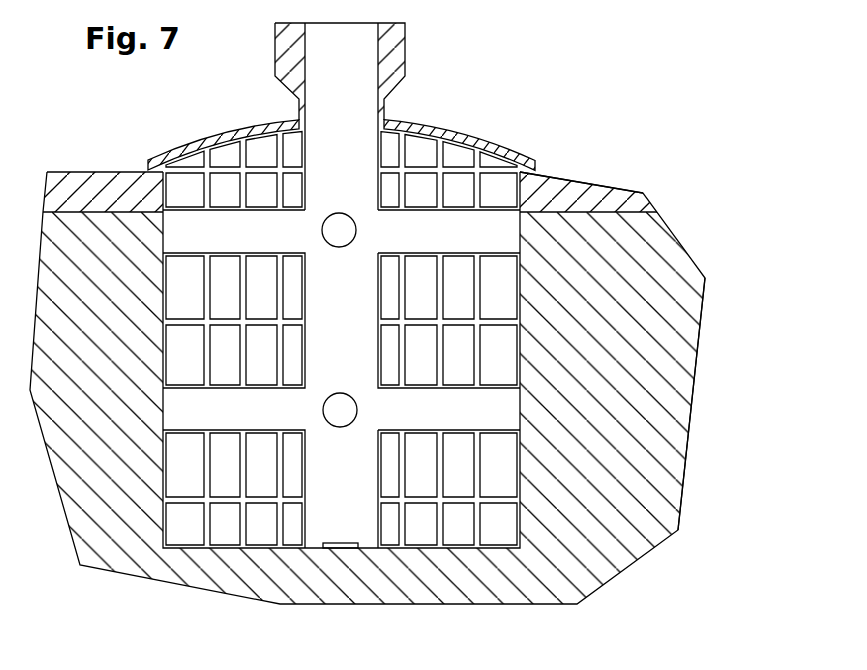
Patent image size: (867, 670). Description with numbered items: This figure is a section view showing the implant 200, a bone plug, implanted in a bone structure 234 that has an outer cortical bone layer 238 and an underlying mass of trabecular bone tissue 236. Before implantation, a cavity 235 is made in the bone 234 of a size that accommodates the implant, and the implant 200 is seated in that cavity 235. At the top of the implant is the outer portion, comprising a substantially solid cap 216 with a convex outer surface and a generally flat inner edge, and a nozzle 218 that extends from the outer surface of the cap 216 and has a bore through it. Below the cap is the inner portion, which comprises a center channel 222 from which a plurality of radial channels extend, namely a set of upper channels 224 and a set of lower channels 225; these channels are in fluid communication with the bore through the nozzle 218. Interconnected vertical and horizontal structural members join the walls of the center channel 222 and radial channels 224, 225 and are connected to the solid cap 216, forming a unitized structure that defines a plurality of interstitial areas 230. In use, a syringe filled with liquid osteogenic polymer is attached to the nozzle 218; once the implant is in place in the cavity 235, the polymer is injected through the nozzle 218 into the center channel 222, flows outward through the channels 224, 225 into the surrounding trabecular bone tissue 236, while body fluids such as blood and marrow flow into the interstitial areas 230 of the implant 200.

The implant 200 is at (665, 72).
The cap 216 is at (500, 148).
The nozzle 218 is at (405, 52).
The center channel 222 is at (366, 159).
The upper channels 224 is at (468, 246).
The lower channels 225 is at (468, 422).
The interstitial areas 230 is at (497, 527).
The bone structure 234 is at (716, 231).
The cavity 235 is at (185, 533).
The trabecular bone tissue 236 is at (668, 368).
The cortical bone layer 238 is at (108, 171).